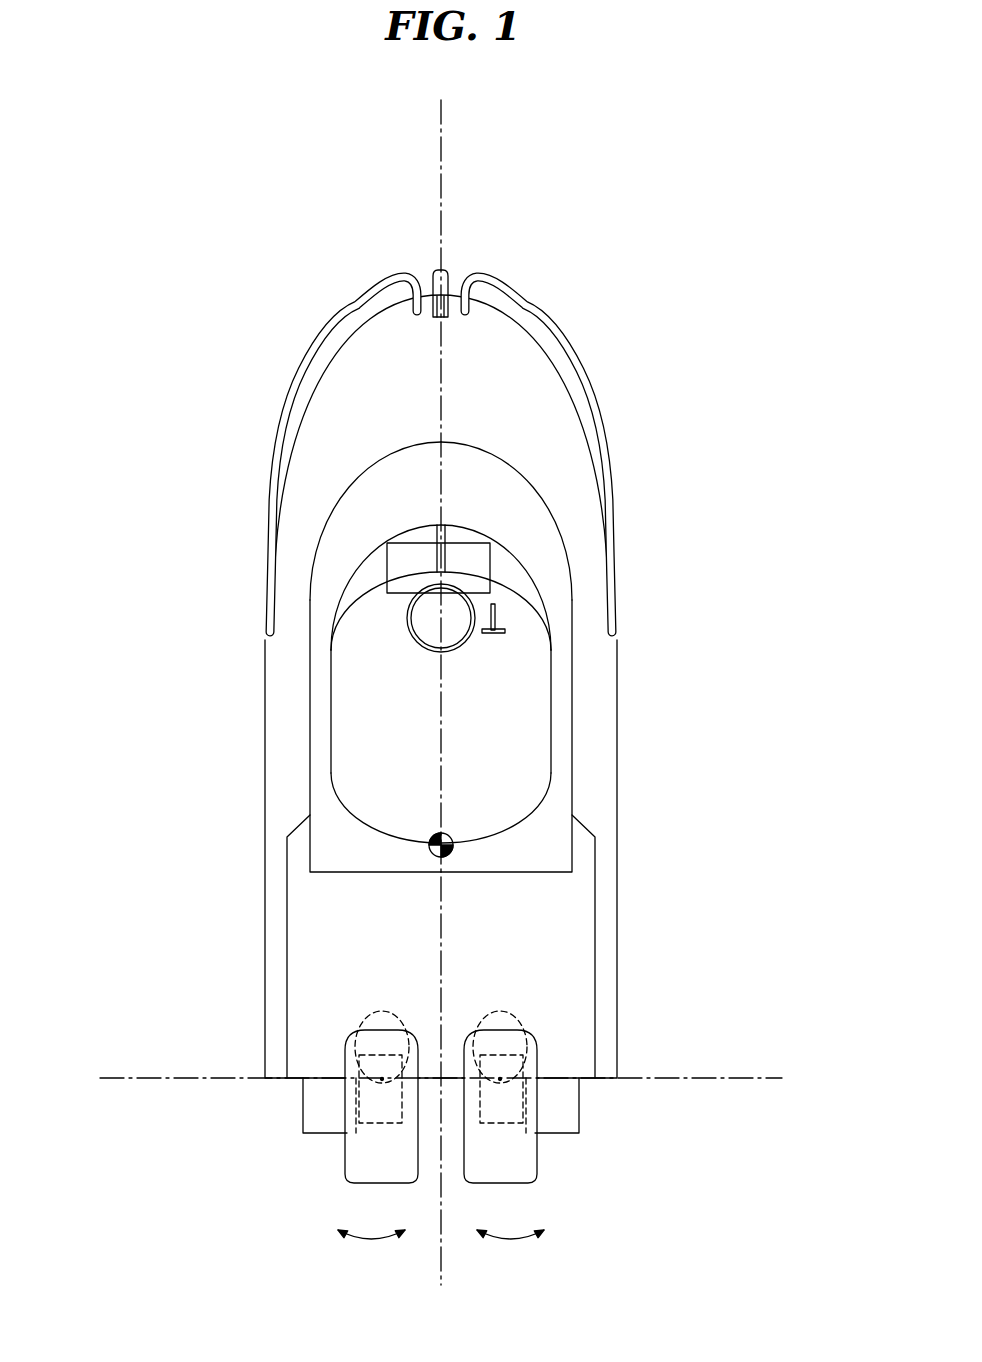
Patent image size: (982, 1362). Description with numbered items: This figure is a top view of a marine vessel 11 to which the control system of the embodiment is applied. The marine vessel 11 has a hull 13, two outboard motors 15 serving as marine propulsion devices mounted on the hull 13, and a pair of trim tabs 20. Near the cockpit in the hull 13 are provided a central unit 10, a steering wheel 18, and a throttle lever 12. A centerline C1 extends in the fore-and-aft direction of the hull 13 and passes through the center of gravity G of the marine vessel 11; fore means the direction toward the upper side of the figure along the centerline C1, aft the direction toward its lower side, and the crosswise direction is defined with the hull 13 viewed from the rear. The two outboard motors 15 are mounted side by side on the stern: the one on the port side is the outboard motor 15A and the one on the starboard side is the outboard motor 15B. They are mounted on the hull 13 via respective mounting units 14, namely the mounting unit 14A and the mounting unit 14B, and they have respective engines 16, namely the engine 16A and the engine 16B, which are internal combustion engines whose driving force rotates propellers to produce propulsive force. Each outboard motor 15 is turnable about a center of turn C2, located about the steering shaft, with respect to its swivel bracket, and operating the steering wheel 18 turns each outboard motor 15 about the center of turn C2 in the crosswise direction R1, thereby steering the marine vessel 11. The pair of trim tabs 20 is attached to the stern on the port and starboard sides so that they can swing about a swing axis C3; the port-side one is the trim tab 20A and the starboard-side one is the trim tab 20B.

The central unit 10 is at (490, 561).
The marine vessel 11 is at (290, 337).
The throttle lever 12 is at (497, 634).
The hull 13 is at (250, 790).
The mounting unit 14 is at (443, 1033).
The mounting unit 14A is at (375, 1013).
The mounting unit 14B is at (507, 1013).
The outboard motor 15 is at (443, 1144).
The outboard motor 15A is at (350, 1186).
The outboard motor 15B is at (532, 1186).
The engine 16 is at (441, 1131).
The engine 16A is at (375, 1125).
The engine 16B is at (507, 1125).
The steering wheel 18 is at (416, 641).
The trim tab 20 is at (437, 1128).
The trim tab 20A is at (303, 1133).
The trim tab 20B is at (579, 1133).
The center of gravity G is at (435, 834).
The centerline C1 is at (441, 164).
The center of turn C2 is at (382, 1080).
The swing axis C3 is at (437, 1080).
The direction R1 is at (441, 1249).